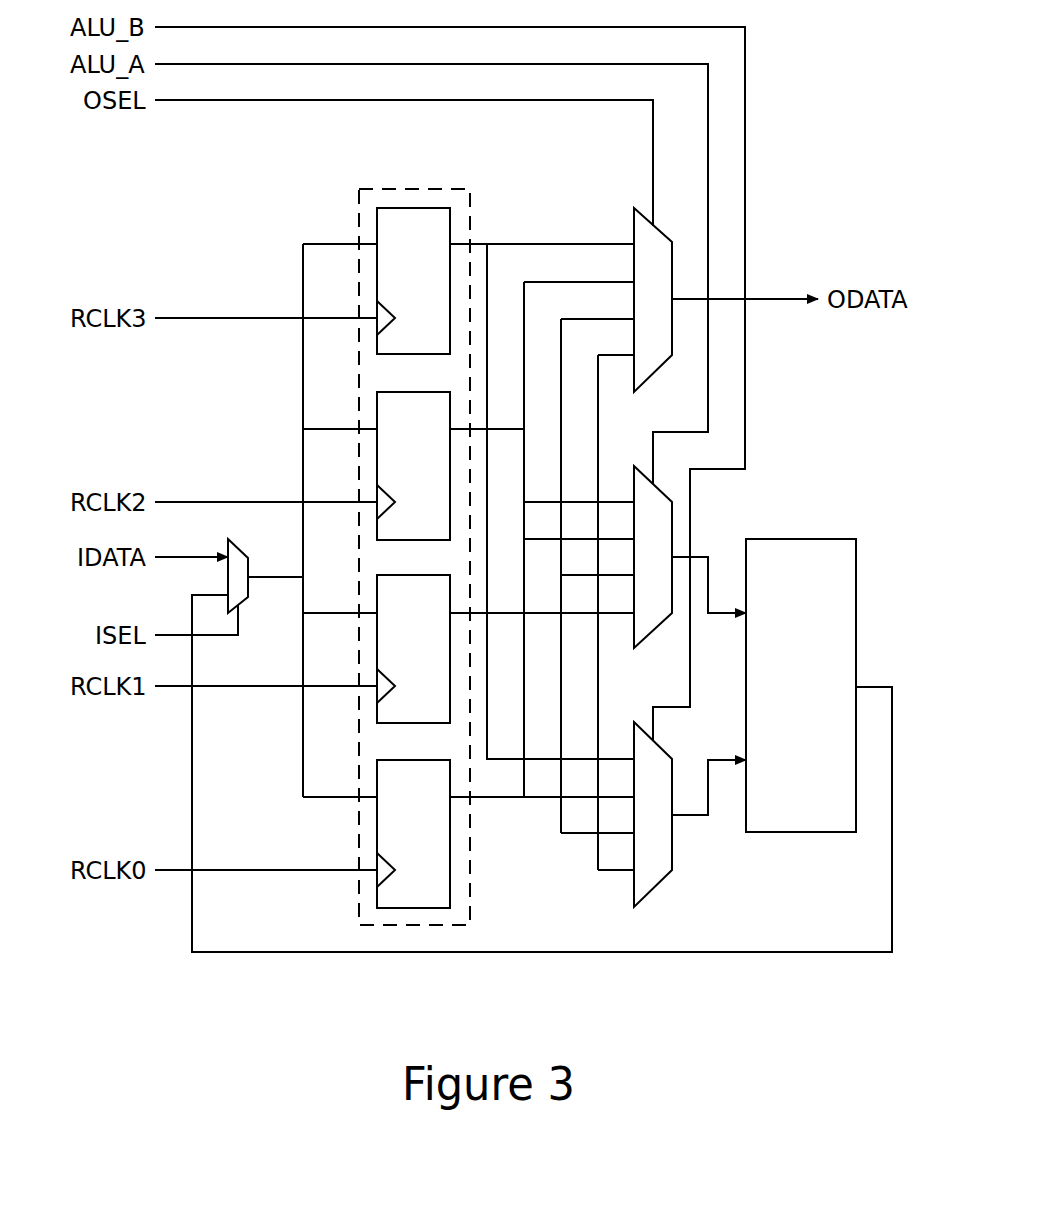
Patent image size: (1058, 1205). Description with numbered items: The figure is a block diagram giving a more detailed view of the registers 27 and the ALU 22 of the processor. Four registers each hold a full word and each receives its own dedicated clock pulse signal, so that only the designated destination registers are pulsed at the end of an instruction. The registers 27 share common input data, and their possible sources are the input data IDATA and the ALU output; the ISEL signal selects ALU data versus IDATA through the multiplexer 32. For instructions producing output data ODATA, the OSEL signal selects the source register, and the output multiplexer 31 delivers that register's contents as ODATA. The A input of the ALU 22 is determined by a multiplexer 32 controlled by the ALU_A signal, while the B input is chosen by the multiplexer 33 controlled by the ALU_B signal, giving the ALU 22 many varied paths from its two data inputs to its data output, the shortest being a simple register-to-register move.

The ALU 22 is at (772, 539).
The registers 27 is at (432, 189).
The output multiplexer 31 is at (667, 235).
The multiplexer 32 is at (658, 487).
The multiplexer 33 is at (660, 884).